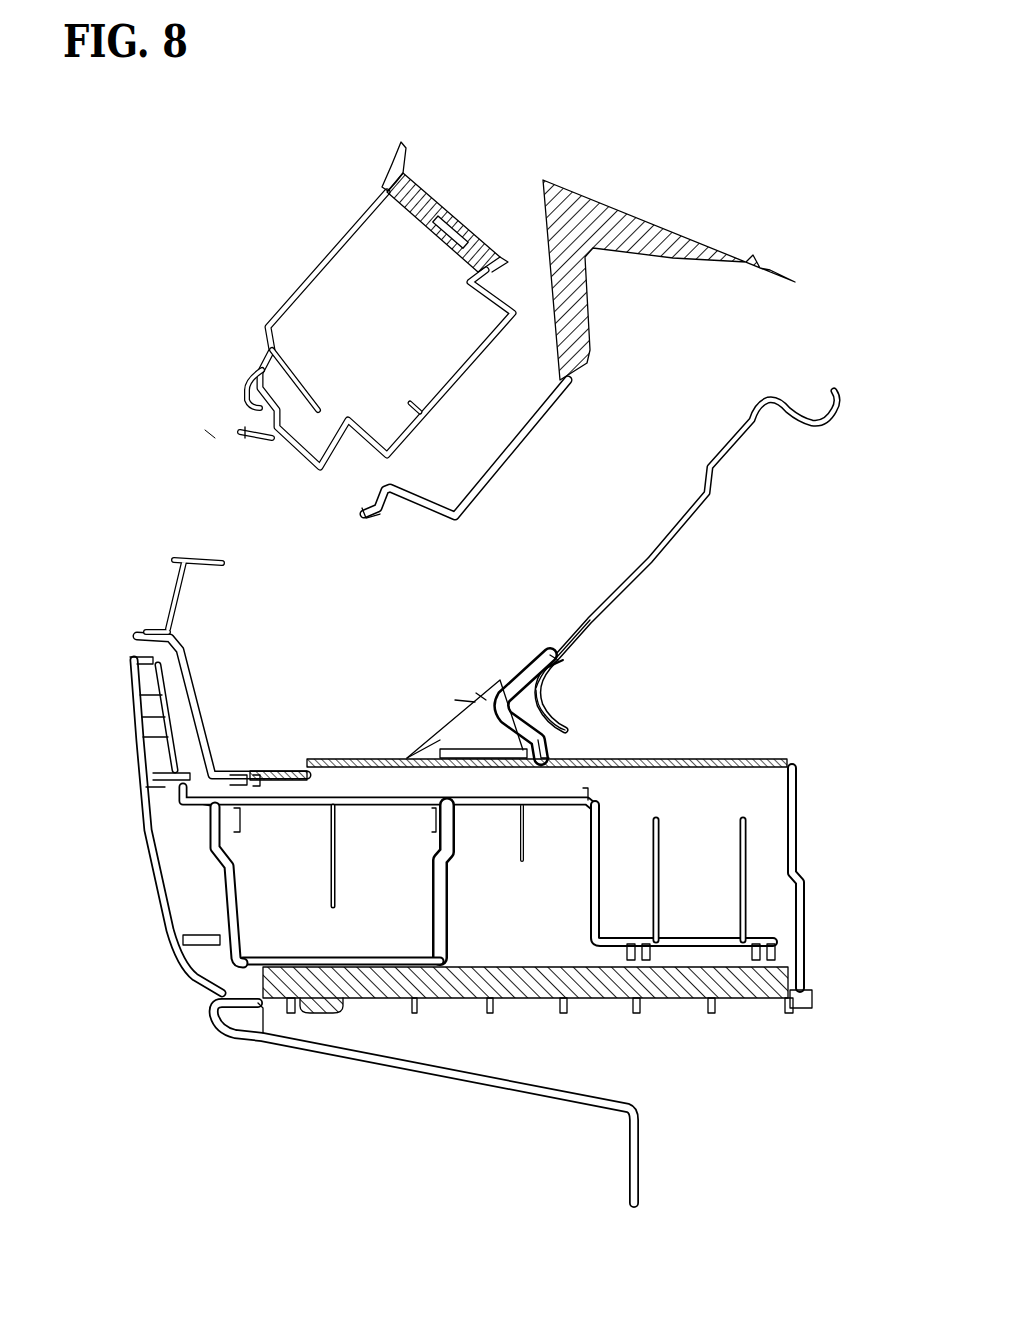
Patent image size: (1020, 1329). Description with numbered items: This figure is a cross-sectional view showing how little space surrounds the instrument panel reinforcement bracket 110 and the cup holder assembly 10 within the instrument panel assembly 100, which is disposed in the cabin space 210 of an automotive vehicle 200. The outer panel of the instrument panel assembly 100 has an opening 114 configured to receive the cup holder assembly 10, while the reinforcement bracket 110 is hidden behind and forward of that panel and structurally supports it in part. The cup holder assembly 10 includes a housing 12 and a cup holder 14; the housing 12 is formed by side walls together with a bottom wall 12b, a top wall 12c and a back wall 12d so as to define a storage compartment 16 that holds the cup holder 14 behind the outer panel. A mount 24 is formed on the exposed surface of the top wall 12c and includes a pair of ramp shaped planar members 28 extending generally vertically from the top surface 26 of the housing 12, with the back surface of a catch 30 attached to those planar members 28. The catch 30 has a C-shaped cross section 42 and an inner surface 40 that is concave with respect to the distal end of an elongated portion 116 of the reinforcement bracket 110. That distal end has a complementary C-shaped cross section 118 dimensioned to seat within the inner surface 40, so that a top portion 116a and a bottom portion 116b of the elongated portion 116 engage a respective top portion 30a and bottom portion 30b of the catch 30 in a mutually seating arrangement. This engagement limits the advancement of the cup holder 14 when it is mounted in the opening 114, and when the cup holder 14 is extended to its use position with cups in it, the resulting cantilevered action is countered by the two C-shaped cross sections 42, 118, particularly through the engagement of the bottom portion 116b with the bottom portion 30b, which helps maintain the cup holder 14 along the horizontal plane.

The automotive vehicle 200 is at (375, 92).
The instrument panel assembly 100 is at (200, 429).
The opening 114 is at (136, 624).
The cup holder assembly 10 is at (257, 745).
The mount 24 is at (438, 715).
The C-shaped cross section 42 is at (448, 692).
The ramp shaped planar members 28 is at (476, 693).
The catch 30 is at (497, 687).
The top portion of the catch 30a is at (547, 670).
The bottom portion of the catch 30b is at (505, 742).
The inner surface 40 is at (556, 655).
The top portion of the elongated portion 116a is at (562, 675).
The elongated portion 116 is at (592, 678).
The C-shaped cross section 118 is at (592, 710).
The bottom portion of the elongated portion 116b is at (568, 733).
The top surface 26 is at (433, 757).
The instrument panel reinforcement bracket 110 is at (700, 522).
The top wall 12c is at (768, 750).
The housing 12 is at (824, 781).
The back wall 12d is at (805, 830).
The bottom wall 12b is at (682, 1010).
The cup holder 14 is at (216, 908).
The storage compartment 16 is at (650, 801).
The cabin space 210 is at (352, 1147).